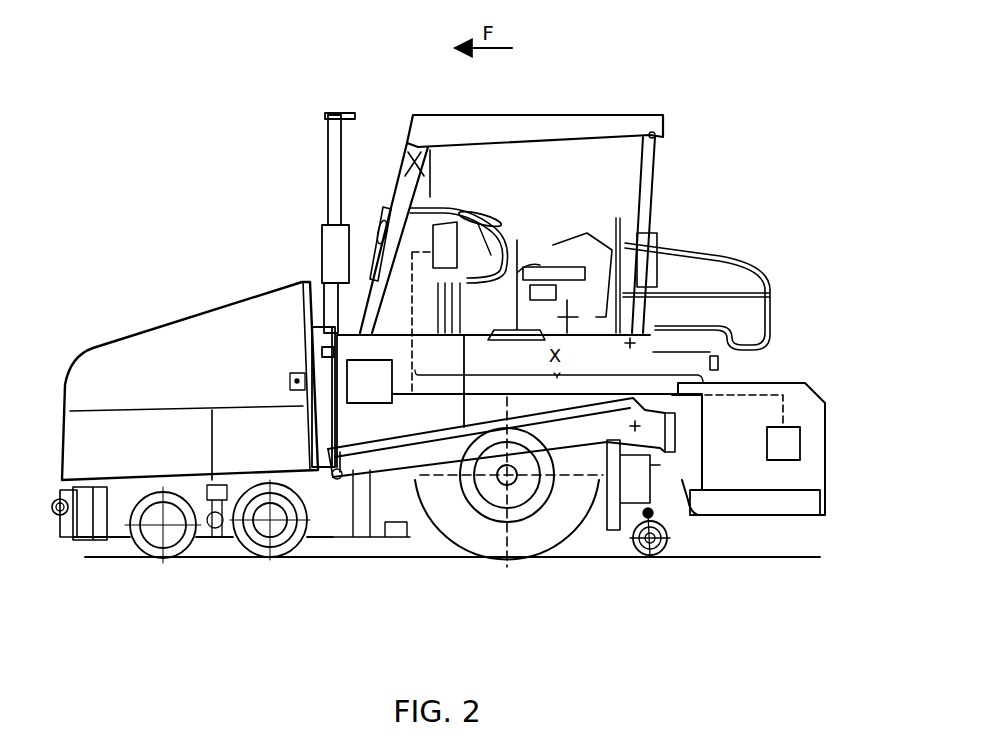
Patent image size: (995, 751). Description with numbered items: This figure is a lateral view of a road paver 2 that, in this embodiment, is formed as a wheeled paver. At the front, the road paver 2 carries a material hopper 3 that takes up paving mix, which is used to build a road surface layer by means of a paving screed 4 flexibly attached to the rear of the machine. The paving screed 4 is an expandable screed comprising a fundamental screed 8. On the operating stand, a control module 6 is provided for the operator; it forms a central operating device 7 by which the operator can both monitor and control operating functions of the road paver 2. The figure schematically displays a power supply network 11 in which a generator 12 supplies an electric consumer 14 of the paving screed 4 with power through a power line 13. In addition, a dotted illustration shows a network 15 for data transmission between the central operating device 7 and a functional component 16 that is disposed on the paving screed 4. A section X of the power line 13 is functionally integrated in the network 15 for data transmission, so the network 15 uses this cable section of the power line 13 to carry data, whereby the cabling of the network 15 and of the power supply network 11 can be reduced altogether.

The road paver 2 is at (148, 170).
The material hopper 3 is at (178, 350).
The paving screed 4 is at (794, 400).
The control module 6 is at (486, 203).
The central operating device 7 is at (440, 220).
The fundamental screed 8 is at (590, 220).
The power supply network 11 is at (505, 410).
The generator 12 is at (378, 400).
The power line 13 is at (437, 394).
The electric consumer 14 is at (787, 508).
The network 15 is at (390, 321).
The functional component 16 is at (792, 443).